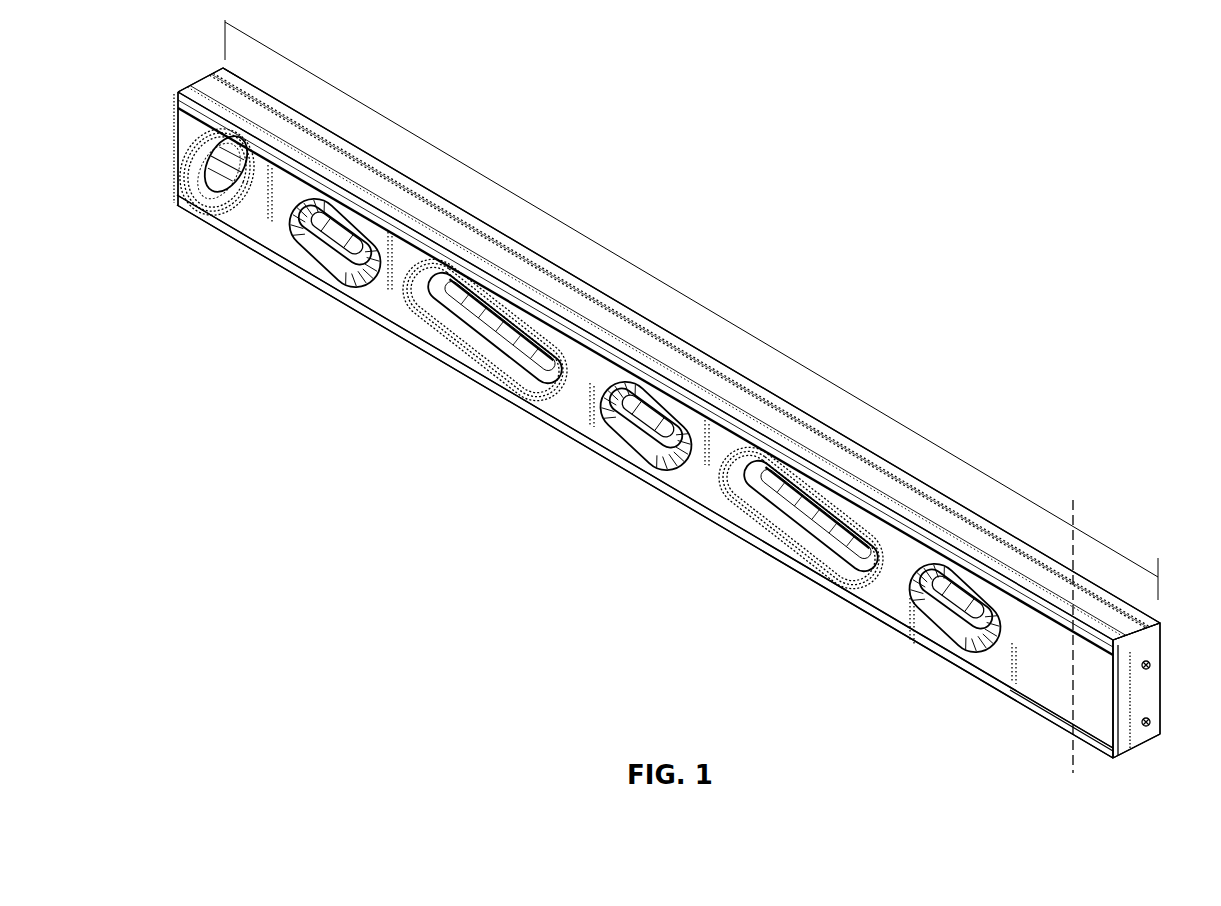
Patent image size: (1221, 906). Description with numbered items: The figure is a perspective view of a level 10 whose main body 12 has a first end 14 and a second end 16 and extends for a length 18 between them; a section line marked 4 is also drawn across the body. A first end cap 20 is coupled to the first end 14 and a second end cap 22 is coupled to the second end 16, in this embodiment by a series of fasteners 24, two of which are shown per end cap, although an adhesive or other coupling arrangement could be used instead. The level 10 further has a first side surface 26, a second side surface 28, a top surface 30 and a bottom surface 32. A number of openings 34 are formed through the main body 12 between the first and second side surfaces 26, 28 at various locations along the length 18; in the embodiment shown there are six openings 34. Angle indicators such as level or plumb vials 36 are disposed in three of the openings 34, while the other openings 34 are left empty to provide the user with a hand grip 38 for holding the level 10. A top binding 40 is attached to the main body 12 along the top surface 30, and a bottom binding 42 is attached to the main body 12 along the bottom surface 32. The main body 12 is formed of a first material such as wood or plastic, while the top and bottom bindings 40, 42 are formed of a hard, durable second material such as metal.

The level 10 is at (767, 156).
The main body 12 is at (688, 485).
The first end 14 is at (167, 221).
The second end 16 is at (1092, 763).
The length 18 is at (358, 104).
The first end cap 20 is at (212, 74).
The second end cap 22 is at (1150, 688).
The fasteners 24 is at (1150, 664).
The first side surface 26 is at (1046, 680).
The second side surface 28 is at (1152, 638).
The top surface 30 is at (950, 522).
The bottom surface 32 is at (727, 535).
The openings 34 is at (221, 196).
The level or plumb vials 36 is at (360, 228).
The hand grip 38 is at (488, 330).
The top binding 40 is at (822, 440).
The bottom binding 42 is at (866, 617).
The section line 4- 4 is at (1073, 500).